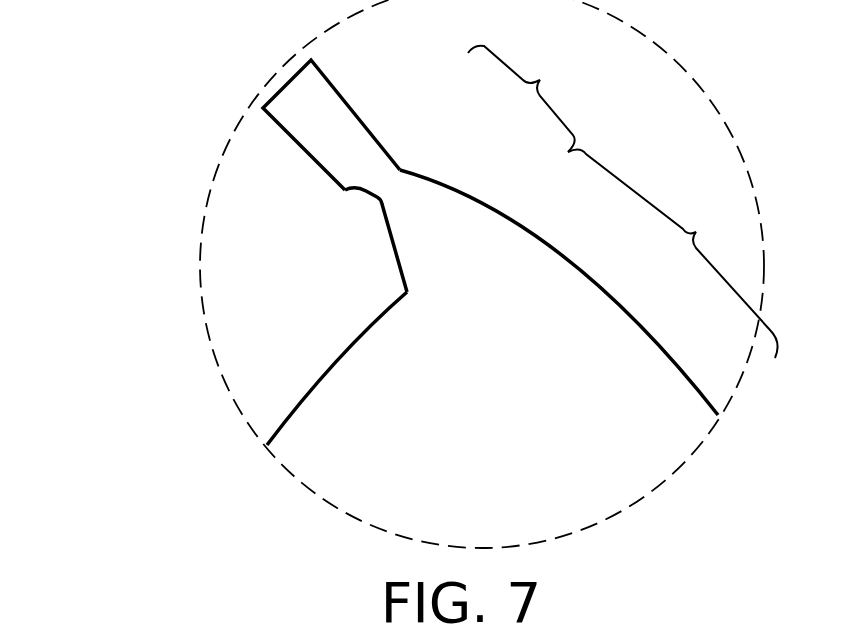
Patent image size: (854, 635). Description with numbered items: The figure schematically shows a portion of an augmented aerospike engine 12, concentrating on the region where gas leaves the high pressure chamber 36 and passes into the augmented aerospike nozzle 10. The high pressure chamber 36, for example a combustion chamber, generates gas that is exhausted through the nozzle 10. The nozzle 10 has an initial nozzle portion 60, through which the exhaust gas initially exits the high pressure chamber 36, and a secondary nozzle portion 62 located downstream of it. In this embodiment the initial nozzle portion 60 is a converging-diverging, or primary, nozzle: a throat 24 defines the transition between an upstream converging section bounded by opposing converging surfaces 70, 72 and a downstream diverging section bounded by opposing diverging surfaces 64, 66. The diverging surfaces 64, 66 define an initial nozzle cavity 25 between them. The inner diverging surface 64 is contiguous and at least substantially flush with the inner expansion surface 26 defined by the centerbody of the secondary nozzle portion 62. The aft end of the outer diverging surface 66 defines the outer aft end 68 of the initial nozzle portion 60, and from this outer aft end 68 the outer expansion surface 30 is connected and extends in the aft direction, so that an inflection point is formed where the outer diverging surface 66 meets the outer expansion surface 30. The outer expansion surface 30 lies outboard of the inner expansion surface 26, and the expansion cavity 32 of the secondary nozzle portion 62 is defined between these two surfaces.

The augmented aerospike nozzle 10 is at (174, 237).
The engine 12 is at (110, 127).
The throat 24 is at (412, 164).
The initial nozzle cavity 25 is at (416, 237).
The inner expansion surface 26 is at (628, 298).
The outer expansion surface 30 is at (295, 413).
The expansion cavity 32 is at (478, 409).
The high pressure chamber 36 is at (323, 144).
The initial nozzle portion 60 is at (521, 99).
The secondary nozzle portion 62 is at (673, 253).
The inner diverging surface 64 is at (489, 200).
The outer diverging surface 66 is at (380, 222).
The outer aft end 68 is at (404, 291).
The converging surface 70 is at (389, 137).
The converging surface 72 is at (343, 196).